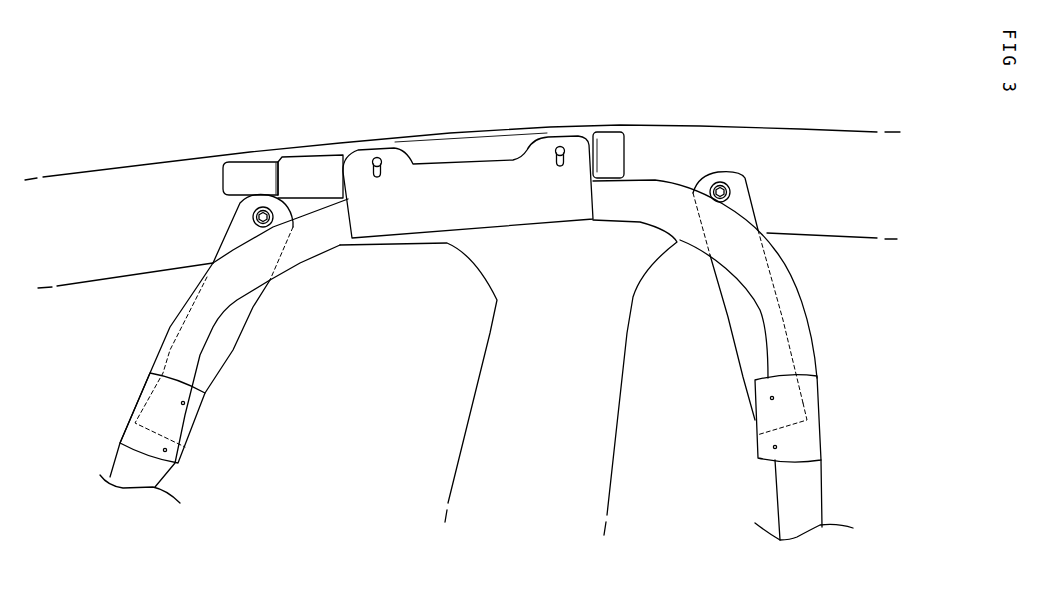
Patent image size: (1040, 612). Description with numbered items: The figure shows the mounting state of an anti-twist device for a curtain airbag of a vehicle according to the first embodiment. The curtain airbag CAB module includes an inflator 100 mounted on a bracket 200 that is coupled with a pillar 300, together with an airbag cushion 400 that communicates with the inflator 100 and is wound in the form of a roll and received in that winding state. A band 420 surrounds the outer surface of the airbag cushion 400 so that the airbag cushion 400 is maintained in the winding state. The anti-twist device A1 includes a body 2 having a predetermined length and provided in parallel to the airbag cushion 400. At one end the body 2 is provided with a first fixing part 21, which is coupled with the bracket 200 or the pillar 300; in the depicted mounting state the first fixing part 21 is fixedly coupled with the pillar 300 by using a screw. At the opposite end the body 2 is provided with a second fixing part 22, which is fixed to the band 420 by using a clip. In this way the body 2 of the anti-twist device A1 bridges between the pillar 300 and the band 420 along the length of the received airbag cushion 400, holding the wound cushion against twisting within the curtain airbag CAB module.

The curtain airbag CAB is at (262, 157).
The inflator 100 is at (306, 153).
The bracket 200 is at (473, 147).
The pillar 300 is at (698, 133).
The airbag cushion 400 is at (793, 287).
The anti-twist device A1 is at (243, 349).
The body 2 is at (733, 310).
The first fixing part 21 is at (740, 190).
The second fixing part 22 is at (795, 405).
The band 420 is at (810, 445).